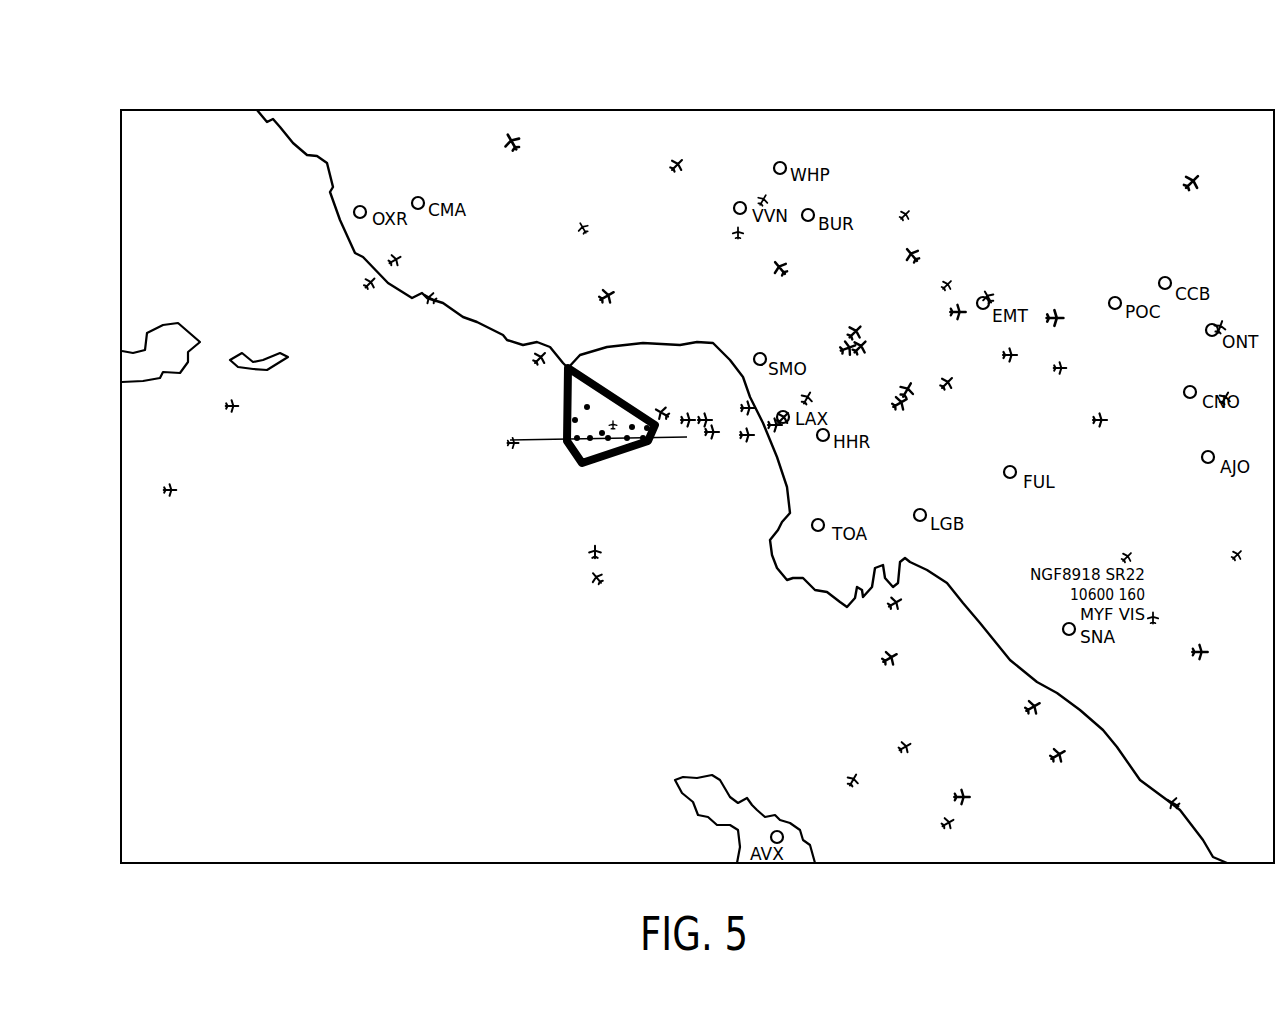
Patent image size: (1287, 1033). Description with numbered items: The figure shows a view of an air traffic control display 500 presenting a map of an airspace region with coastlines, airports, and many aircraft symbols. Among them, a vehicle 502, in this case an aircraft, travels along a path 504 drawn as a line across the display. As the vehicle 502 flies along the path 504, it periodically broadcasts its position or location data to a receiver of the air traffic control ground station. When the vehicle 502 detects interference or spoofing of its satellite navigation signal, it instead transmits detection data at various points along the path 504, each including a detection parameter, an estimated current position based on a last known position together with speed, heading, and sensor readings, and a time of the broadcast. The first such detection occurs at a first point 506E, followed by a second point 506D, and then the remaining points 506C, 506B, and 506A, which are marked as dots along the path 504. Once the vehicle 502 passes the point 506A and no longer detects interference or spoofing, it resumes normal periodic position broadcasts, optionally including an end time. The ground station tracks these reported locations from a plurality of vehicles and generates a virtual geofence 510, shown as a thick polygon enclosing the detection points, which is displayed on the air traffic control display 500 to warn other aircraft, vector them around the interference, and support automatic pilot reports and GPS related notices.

The air traffic control display 500 is at (197, 78).
The vehicle 502 is at (516, 448).
The path 504 is at (540, 440).
The point 506A is at (577, 441).
The point 506B is at (590, 441).
The point 506C is at (608, 441).
The second point 506D is at (631, 426).
The first point 506E is at (645, 443).
The virtual geofence 510 is at (581, 373).